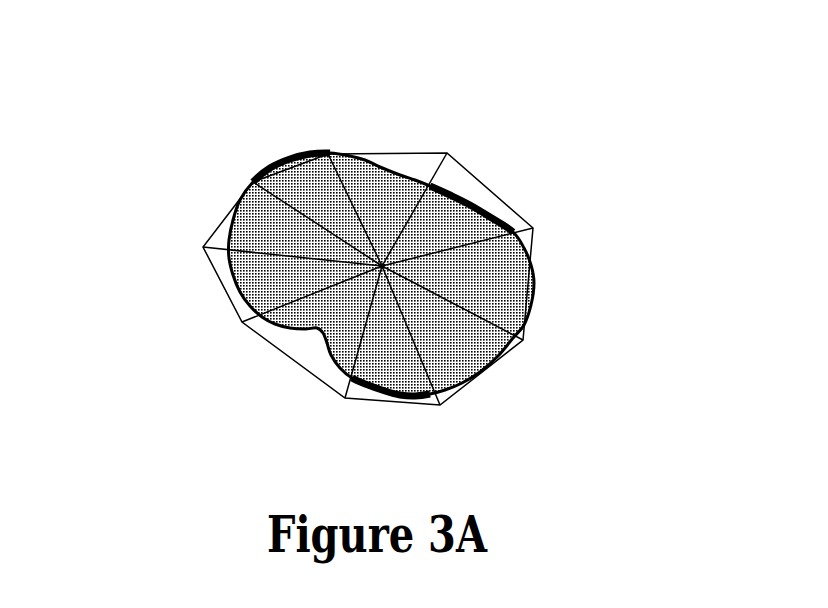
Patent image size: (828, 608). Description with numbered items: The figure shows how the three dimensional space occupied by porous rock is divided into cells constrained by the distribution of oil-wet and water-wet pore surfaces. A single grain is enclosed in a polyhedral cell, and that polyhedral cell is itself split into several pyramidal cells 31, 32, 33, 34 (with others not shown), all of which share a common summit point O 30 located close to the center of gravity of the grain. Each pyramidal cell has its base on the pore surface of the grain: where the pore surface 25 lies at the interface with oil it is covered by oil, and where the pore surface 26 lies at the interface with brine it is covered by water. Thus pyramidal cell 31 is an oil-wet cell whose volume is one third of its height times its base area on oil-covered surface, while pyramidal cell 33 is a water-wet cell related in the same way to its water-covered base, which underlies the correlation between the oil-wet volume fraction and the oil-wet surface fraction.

The oil-covered pore surface 25 is at (288, 156).
The water-covered pore surface 26 is at (381, 165).
The common summit point O 30 is at (353, 293).
The pyramidal cell 31 is at (299, 191).
The pyramidal cell 32 is at (393, 194).
The pyramidal cell 33 is at (446, 222).
The pyramidal cell 34 is at (512, 274).